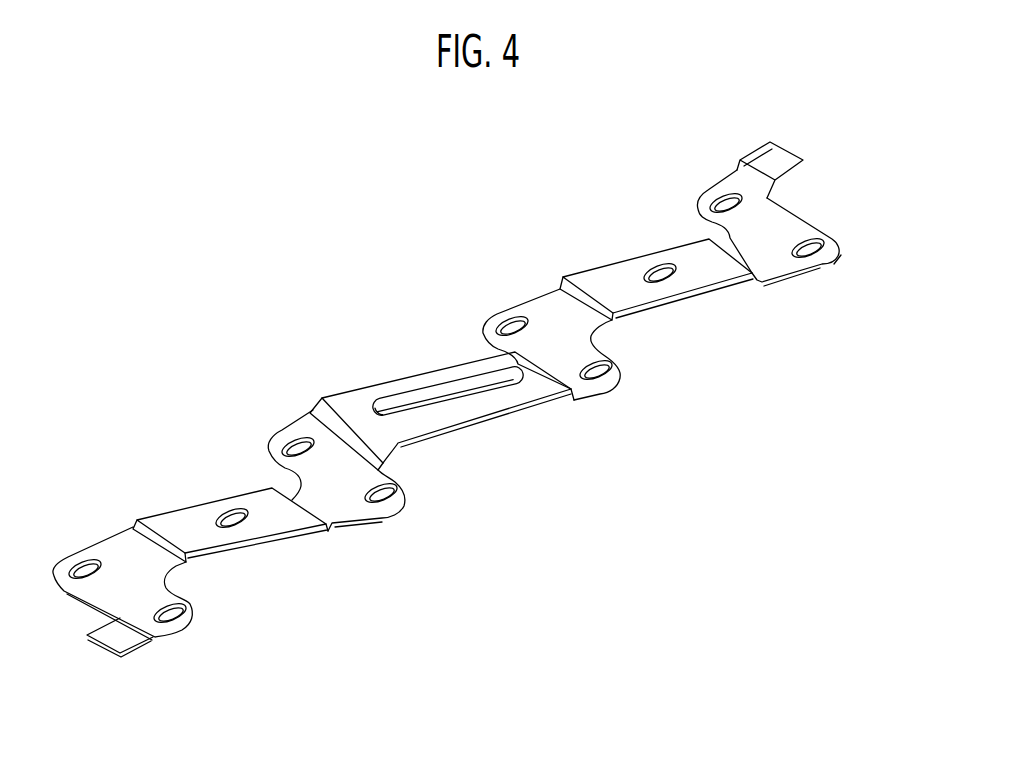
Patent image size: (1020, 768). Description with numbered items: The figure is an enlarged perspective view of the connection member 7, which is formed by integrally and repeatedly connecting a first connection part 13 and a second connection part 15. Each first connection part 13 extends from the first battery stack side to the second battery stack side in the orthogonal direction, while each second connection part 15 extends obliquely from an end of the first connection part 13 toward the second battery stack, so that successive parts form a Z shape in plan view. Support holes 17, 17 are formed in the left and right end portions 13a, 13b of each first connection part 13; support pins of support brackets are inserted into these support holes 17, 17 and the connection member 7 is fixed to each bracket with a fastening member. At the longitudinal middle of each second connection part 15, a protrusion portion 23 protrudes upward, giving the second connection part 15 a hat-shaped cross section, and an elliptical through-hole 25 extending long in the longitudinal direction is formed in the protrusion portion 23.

The connection member 7 is at (487, 277).
The first connection part 13 is at (778, 226).
The end portion of the first connection part 13a is at (703, 193).
The end portion of the first connection part 13b is at (825, 260).
The second connection part 15 is at (701, 228).
The support hole 17 is at (720, 198).
The protrusion portion 23 is at (705, 268).
The through-hole 25 is at (662, 280).